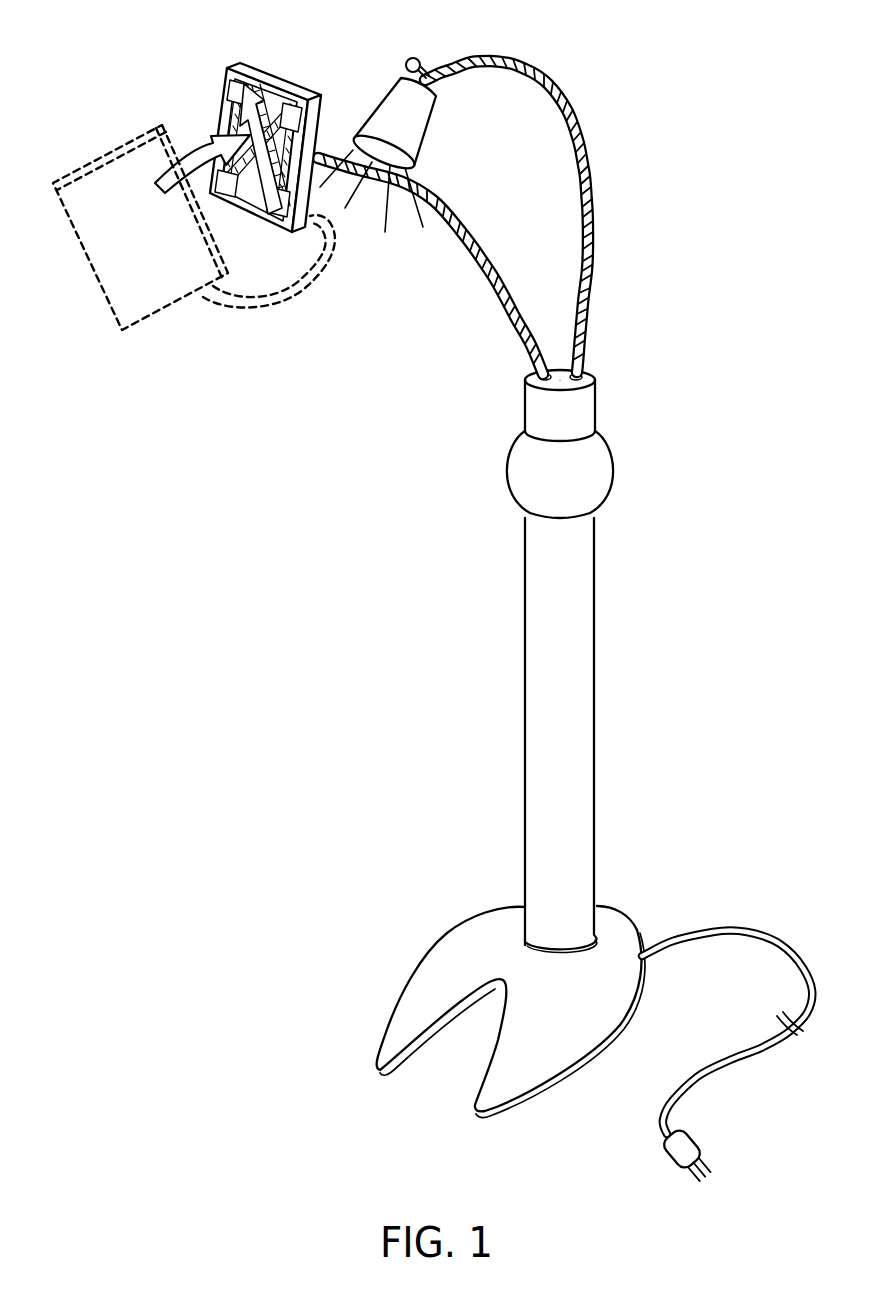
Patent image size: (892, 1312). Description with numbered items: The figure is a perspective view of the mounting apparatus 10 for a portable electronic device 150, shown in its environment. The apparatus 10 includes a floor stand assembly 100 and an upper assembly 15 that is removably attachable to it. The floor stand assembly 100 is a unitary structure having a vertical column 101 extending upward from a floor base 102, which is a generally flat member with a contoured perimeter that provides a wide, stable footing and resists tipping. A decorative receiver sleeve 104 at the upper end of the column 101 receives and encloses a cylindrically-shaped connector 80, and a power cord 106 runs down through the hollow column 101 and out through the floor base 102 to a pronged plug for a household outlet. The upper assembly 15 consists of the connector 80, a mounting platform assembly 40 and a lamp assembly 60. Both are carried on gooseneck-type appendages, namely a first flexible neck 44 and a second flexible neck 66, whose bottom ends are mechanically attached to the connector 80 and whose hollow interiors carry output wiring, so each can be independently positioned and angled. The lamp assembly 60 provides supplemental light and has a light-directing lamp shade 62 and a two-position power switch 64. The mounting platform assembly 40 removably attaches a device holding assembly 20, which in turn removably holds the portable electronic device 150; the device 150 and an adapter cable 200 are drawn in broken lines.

The apparatus 10 is at (370, 571).
The upper assembly 15 is at (483, 375).
The device holding assembly 20 is at (210, 110).
The mounting platform assembly 40 is at (284, 70).
The first flexible neck 44 is at (484, 247).
The lamp assembly 60 is at (547, 214).
The lamp shade 62 is at (428, 118).
The power switch 64 is at (413, 58).
The second flexible neck 66 is at (580, 115).
The connector 80 is at (586, 405).
The floor stand assembly 100 is at (520, 716).
The column 101 is at (590, 590).
The floor base 102 is at (437, 958).
The receiver sleeve 104 is at (597, 478).
The power cord 106 is at (737, 942).
The portable electronic device 150 is at (163, 313).
The adapter cable 200 is at (292, 300).